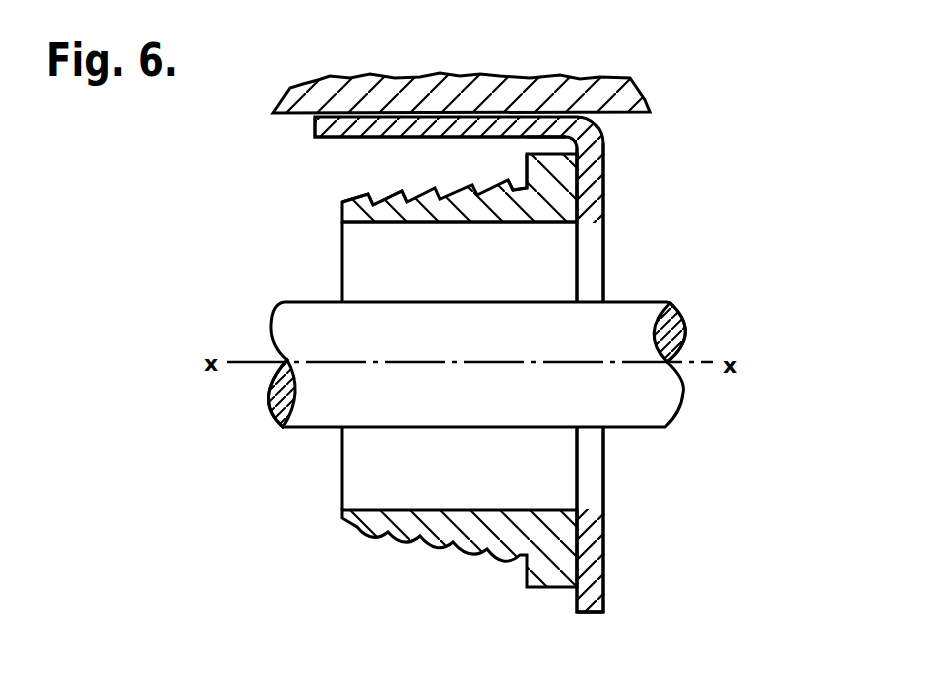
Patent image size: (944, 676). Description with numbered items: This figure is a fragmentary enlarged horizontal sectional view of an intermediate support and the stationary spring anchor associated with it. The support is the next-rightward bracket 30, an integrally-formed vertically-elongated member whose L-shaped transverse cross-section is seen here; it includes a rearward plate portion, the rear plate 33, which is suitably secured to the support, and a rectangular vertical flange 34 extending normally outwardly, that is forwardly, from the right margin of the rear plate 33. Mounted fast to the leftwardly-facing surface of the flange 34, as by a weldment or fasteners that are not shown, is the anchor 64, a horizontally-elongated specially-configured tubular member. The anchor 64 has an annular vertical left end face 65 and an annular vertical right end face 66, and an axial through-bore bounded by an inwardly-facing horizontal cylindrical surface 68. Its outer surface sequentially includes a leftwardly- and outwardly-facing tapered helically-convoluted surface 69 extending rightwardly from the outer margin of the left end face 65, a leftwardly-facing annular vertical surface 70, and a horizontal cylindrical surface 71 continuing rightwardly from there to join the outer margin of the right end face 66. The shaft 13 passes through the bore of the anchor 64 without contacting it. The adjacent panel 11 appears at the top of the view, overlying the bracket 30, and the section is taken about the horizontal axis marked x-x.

The panel 11 is at (630, 74).
The bracket 30 is at (488, 365).
The rear plate 33 is at (324, 139).
The right end face 66 is at (606, 188).
The flange 34 is at (598, 593).
The horizontal cylindrical surface 71 is at (543, 145).
The anchor 64 is at (392, 368).
The left end face 65 is at (340, 210).
The tapered helically-convoluted surface 69 is at (387, 202).
The annular vertical surface 70 is at (524, 186).
The cylindrical surface 68 is at (497, 223).
The shaft 13 is at (688, 302).